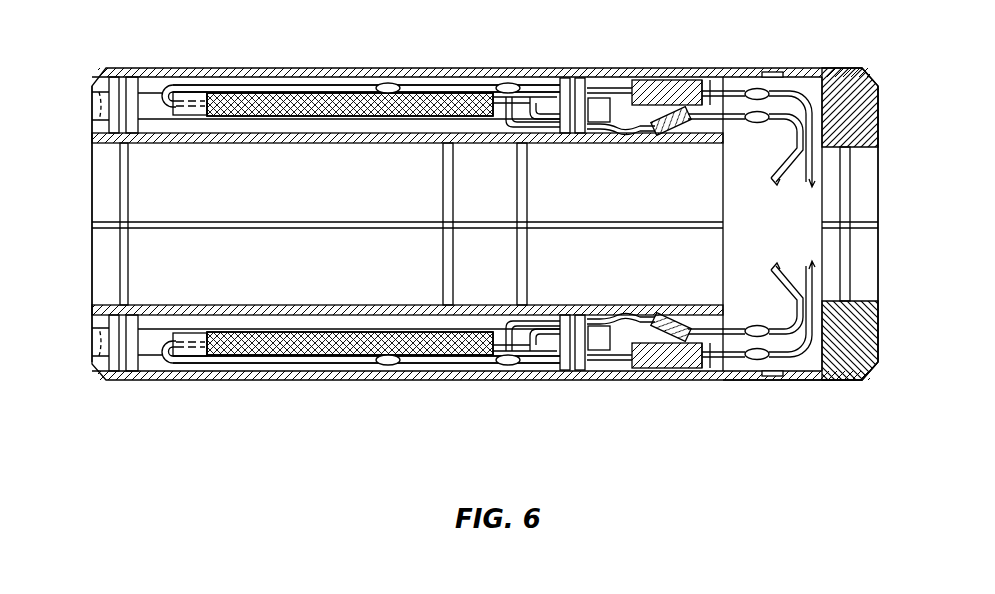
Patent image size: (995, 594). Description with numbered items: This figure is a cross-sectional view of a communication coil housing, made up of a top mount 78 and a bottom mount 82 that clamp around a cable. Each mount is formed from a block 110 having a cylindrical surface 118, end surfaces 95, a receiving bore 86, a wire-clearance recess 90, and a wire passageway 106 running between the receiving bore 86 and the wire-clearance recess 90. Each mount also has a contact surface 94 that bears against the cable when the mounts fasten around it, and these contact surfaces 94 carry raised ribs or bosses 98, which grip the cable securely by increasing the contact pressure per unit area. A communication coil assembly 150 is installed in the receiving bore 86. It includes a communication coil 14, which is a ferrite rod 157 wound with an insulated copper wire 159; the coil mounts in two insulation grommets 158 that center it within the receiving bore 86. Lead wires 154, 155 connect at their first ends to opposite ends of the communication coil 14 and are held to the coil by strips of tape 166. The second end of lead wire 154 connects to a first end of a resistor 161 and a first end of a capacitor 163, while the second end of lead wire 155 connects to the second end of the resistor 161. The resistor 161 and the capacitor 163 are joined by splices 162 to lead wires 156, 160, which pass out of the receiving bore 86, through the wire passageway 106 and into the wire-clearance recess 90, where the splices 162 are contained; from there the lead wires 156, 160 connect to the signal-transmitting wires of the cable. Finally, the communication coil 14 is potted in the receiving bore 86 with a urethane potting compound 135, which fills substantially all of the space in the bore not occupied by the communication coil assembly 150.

The communication coil 14 is at (240, 95).
The top mount 78 is at (800, 88).
The bottom mount 82 is at (795, 381).
The receiving bore 86 is at (100, 88).
The wire-clearance recess 90 is at (847, 68).
The contact surface 94 is at (130, 212).
The end surface 95 is at (93, 158).
The boss 98 is at (126, 188).
The wire passageway 106 is at (725, 92).
The block 110 is at (872, 79).
The cylindrical surface 118 is at (370, 95).
The potting compound 135 is at (96, 120).
The communication coil assembly 150 is at (432, 95).
The lead wire 154 is at (508, 83).
The lead wire 155 is at (565, 78).
The lead wire 156 is at (813, 172).
The ferrite rod 157 is at (160, 80).
The insulation grommet 158 is at (103, 72).
The insulated copper wire 159 is at (290, 85).
The lead wire 160 is at (768, 92).
The resistor 161 is at (660, 125).
The splice 162 is at (777, 118).
The capacitor 163 is at (665, 80).
The strip of tape 166 is at (195, 120).